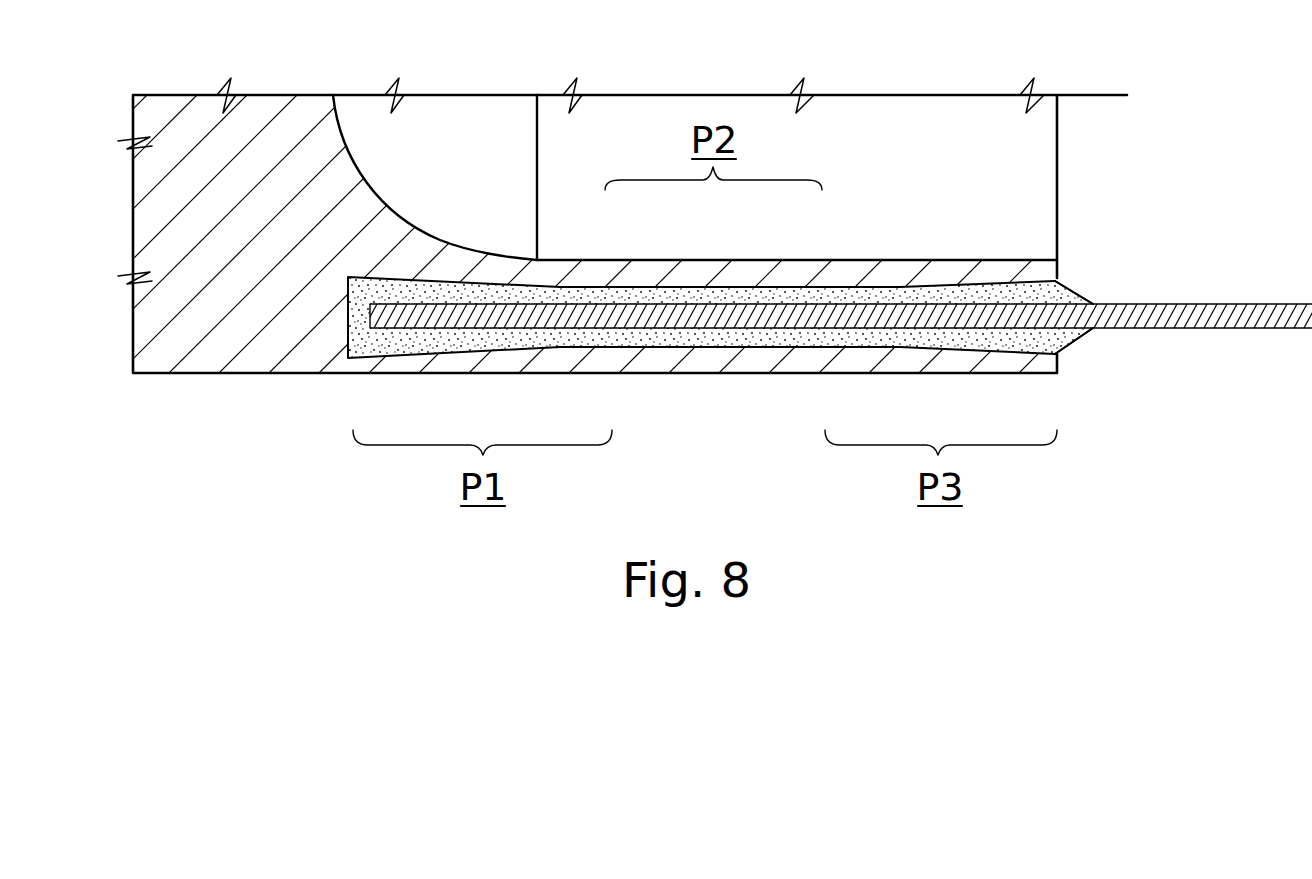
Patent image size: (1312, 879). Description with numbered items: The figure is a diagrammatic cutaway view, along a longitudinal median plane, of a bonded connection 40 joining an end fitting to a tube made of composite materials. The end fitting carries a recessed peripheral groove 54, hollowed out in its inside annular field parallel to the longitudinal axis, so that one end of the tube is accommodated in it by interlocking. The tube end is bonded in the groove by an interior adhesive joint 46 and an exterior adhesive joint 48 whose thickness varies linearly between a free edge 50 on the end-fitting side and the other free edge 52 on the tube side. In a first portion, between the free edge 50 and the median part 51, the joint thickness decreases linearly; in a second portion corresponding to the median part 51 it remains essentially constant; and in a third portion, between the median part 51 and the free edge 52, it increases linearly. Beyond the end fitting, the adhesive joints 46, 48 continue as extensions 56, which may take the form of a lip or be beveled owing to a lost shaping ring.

The bonded connection 40 is at (272, 488).
The interior adhesive joint 46 is at (1038, 287).
The exterior adhesive joint 48 is at (1043, 355).
The free edge on the end-fitting side 50 is at (347, 320).
The median part 51 is at (713, 343).
The free edge on the tube side 52 is at (1093, 300).
The peripheral groove 54 is at (493, 367).
The extensions 56 is at (1092, 297).